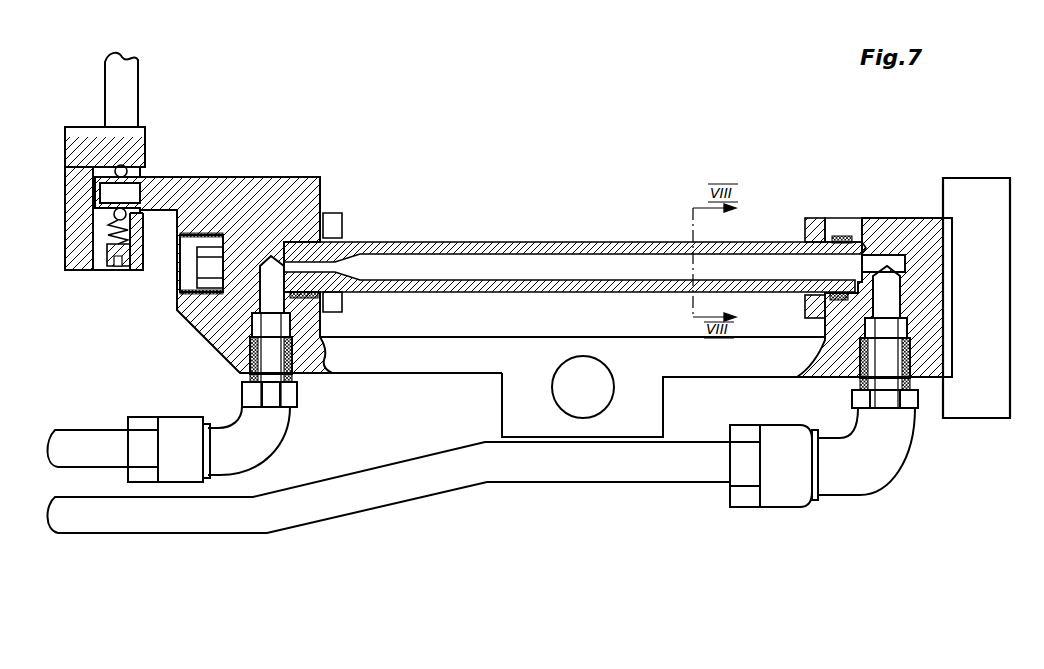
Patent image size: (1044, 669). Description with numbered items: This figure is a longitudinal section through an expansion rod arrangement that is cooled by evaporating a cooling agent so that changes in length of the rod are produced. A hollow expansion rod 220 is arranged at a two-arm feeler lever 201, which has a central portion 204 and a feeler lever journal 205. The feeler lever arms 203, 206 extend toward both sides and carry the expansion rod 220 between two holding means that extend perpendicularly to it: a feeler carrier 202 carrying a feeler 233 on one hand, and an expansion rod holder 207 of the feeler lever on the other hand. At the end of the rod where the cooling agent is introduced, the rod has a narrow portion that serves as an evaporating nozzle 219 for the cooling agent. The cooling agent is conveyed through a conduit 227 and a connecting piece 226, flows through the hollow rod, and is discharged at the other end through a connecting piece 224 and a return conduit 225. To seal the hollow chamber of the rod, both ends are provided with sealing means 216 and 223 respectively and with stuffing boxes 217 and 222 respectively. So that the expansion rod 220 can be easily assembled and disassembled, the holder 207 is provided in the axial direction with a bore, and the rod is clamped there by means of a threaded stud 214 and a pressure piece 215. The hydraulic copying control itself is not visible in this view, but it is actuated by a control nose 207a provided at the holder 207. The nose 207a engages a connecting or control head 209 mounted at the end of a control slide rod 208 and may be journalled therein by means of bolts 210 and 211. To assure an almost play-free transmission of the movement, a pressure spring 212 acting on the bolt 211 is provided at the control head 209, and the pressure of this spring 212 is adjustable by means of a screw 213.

The two-arm feeler lever 201 is at (530, 350).
The feeler carrier 202 is at (915, 250).
The feeler lever arm 203 is at (752, 370).
The central portion 204 is at (640, 423).
The feeler lever journal 205 is at (597, 396).
The feeler lever arm 206 is at (433, 370).
The expansion rod holder 207 is at (272, 211).
The control nose 207a is at (134, 203).
The control slide rod 208 is at (120, 93).
The control head 209 is at (133, 140).
The bolt 210 is at (126, 166).
The bolt 211 is at (130, 202).
The pressure spring 212 is at (80, 264).
The screw 213 is at (108, 262).
The threaded stud 214 is at (209, 262).
The pressure piece 215 is at (287, 236).
The sealing means 216 is at (331, 212).
The stuffing box 217 is at (343, 215).
The evaporating nozzle 219 is at (372, 241).
The expansion rod 220 is at (590, 246).
The stuffing box 222 is at (822, 218).
The sealing means 223 is at (838, 238).
The connecting piece 224 is at (860, 476).
The return conduit 225 is at (557, 476).
The connecting piece 226 is at (252, 458).
The conduit 227 is at (99, 460).
The feeler 233 is at (993, 261).